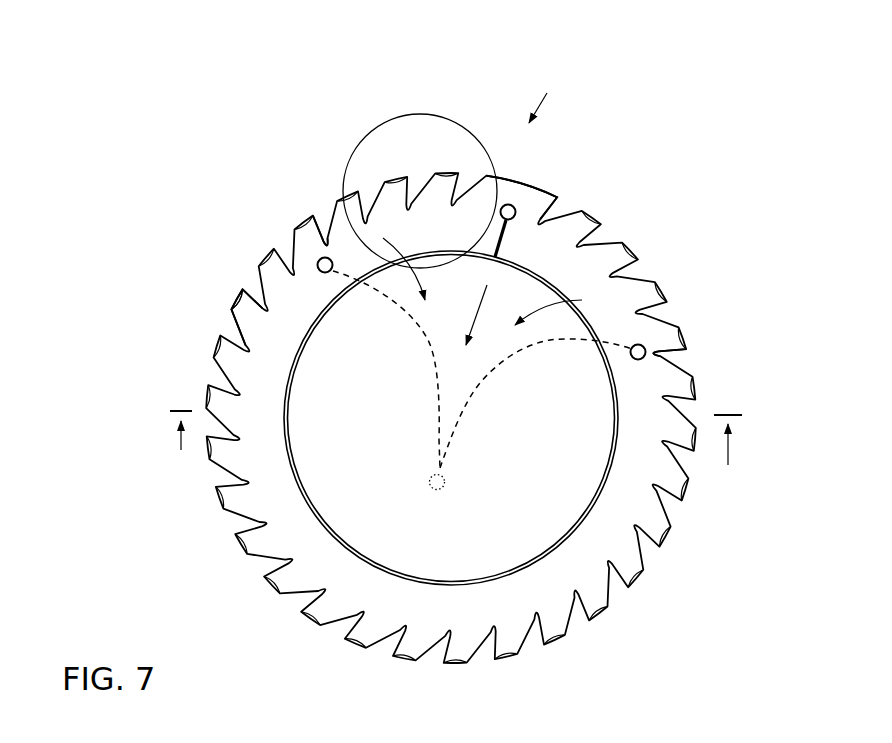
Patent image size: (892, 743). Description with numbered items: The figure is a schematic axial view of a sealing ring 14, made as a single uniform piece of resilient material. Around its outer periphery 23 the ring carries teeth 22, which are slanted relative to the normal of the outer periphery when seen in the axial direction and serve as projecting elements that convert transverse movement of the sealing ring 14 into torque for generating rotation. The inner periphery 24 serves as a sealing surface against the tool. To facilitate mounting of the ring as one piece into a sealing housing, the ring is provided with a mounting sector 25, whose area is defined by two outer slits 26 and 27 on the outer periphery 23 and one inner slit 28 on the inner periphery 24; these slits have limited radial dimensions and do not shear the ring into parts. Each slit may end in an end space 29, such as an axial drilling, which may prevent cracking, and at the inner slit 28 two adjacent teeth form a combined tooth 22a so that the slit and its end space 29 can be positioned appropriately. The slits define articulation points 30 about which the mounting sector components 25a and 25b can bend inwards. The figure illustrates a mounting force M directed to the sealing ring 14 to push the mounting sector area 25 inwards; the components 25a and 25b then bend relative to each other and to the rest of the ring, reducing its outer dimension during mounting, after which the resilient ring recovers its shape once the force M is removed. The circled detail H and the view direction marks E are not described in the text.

The sealing ring 14 is at (180, 206).
The teeth 22 is at (243, 303).
The combined tooth 22a is at (536, 200).
The outer periphery 23 is at (210, 353).
The inner periphery 24 is at (292, 432).
The mounting sector 25 is at (650, 215).
The mounting sector component 25a is at (440, 393).
The mounting sector component 25b is at (480, 393).
The outer slit 26 is at (325, 250).
The outer slit 27 is at (650, 345).
The inner slit 28 is at (502, 243).
The end space 29 is at (515, 206).
The articulation point 30 is at (535, 197).
The detail circle H is at (353, 152).
The mounting force M is at (548, 96).
The section view direction E is at (451, 438).